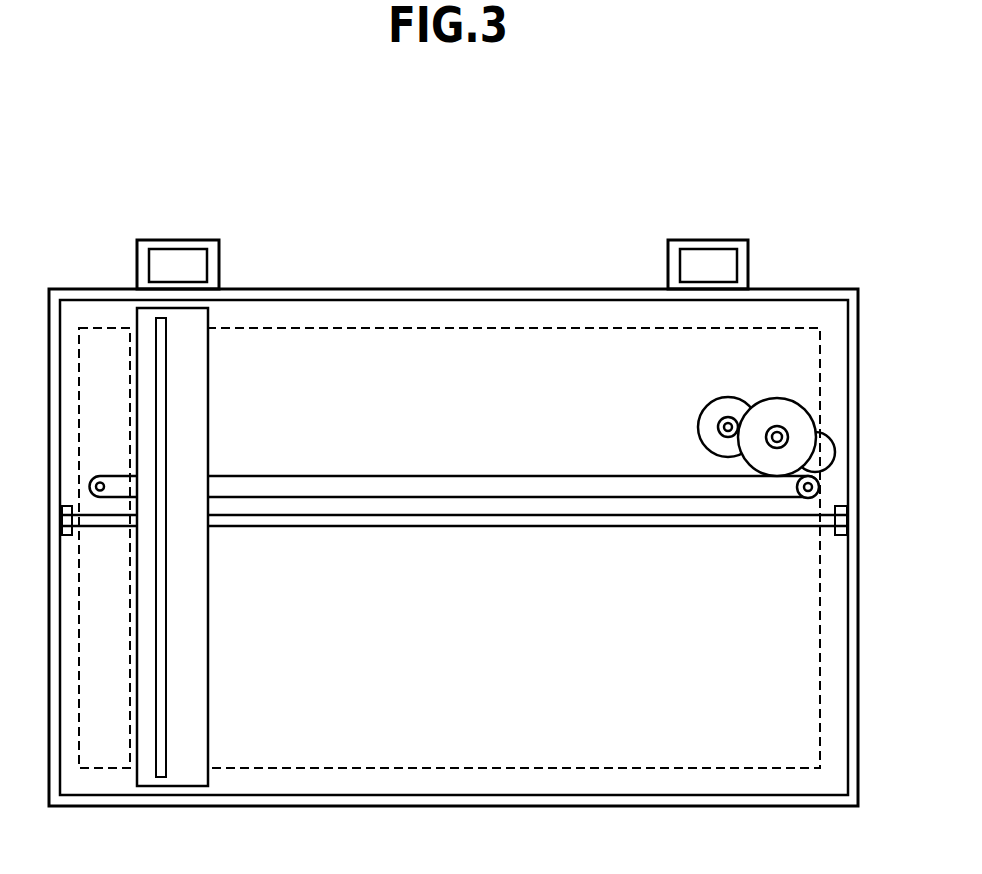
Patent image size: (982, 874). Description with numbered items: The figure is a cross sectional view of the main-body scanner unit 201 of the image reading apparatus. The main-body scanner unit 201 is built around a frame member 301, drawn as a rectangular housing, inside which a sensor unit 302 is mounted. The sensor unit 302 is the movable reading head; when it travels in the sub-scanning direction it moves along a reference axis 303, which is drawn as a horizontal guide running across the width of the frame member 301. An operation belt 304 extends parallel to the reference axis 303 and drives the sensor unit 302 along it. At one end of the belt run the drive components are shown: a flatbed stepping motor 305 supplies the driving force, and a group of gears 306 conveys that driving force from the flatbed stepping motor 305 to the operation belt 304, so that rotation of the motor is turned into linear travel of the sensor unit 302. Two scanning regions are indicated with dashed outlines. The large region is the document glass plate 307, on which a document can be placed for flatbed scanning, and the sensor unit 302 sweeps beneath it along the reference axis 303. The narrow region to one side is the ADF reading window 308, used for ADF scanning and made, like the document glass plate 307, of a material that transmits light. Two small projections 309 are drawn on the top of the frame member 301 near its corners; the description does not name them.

The main-body scanner unit 201 is at (693, 181).
The frame member 301 is at (426, 300).
The sensor unit 302 is at (166, 590).
The reference axis 303 is at (463, 528).
The operation belt 304 is at (486, 475).
The flatbed stepping motor 305 is at (706, 408).
The group of gears 306 is at (832, 432).
The document glass plate 307 is at (493, 768).
The ADF reading window 308 is at (101, 768).
The handles 309 is at (183, 249).